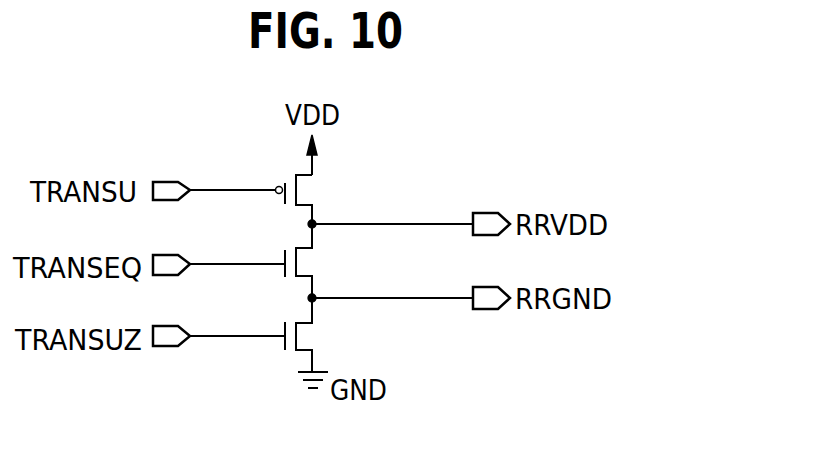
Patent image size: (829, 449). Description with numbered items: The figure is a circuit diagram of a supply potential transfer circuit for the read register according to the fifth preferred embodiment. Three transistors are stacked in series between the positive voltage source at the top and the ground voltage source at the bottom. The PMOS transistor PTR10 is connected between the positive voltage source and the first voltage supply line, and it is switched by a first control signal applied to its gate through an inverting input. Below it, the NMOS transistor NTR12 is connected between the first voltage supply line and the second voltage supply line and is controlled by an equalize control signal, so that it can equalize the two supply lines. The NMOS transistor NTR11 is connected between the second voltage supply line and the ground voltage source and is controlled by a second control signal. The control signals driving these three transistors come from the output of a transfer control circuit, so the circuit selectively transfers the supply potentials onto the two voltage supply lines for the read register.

The PMOS transistor PTR10 is at (340, 193).
The NMOS transistor NTR12 is at (344, 261).
The NMOS transistor NTR11 is at (344, 335).